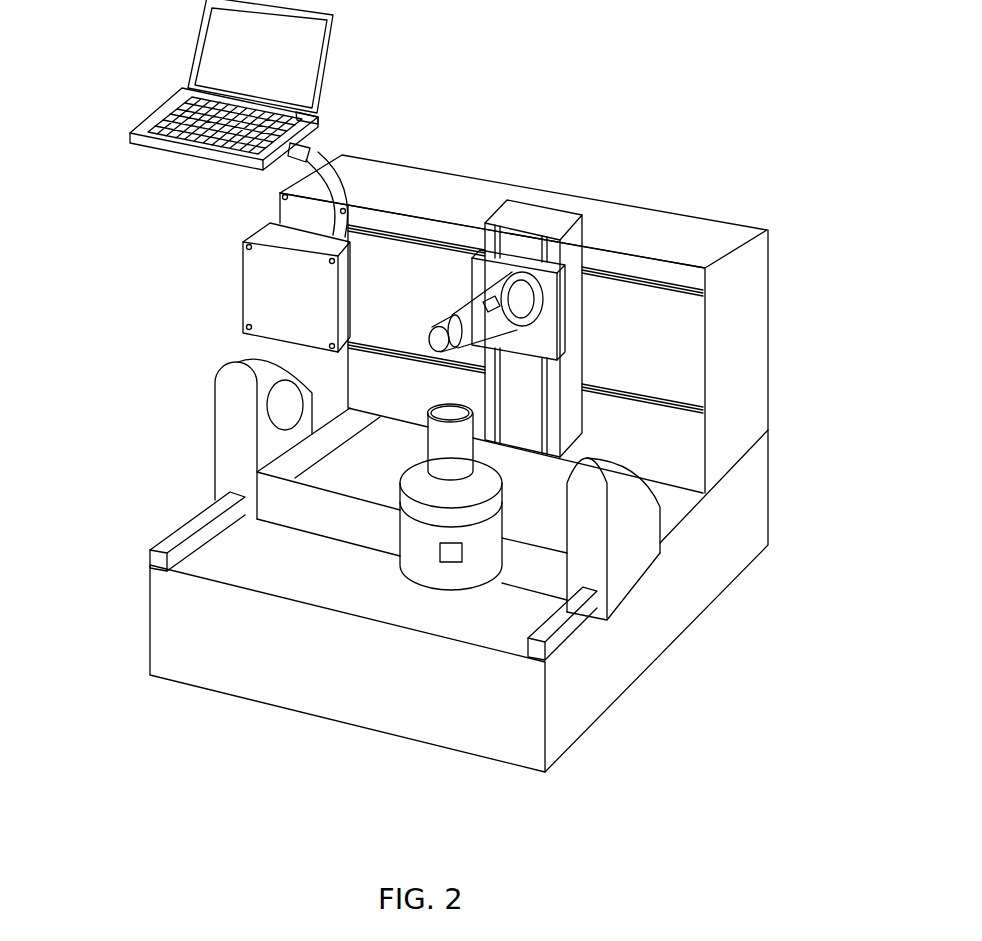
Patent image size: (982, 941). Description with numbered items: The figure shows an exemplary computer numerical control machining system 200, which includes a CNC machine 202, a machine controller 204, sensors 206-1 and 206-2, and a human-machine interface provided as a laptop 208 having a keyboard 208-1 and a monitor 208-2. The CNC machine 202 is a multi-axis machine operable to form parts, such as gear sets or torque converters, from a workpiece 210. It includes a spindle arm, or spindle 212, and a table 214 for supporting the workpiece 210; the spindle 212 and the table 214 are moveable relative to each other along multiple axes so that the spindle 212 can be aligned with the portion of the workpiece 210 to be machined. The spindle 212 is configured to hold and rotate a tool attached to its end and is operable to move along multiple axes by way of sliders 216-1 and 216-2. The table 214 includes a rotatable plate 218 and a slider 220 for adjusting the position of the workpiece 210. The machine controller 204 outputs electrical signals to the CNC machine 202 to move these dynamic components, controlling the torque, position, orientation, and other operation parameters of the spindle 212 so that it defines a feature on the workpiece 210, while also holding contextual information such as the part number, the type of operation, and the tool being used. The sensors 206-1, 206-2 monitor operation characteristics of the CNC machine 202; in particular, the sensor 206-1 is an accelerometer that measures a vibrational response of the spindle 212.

The machining system 200 is at (702, 85).
The CNC machine 202 is at (733, 213).
The machine controller 204 is at (250, 285).
The sensor 206-1 is at (495, 297).
The sensor 206-2 is at (443, 557).
The laptop 208 is at (201, 118).
The keyboard 208-1 is at (162, 108).
The monitor 208-2 is at (200, 36).
The workpiece 210 is at (438, 450).
The spindle arm 212 is at (632, 273).
The table 214 is at (688, 582).
The slider 216-1 is at (432, 238).
The slider 216-2 is at (553, 253).
The rotatable plate 218 is at (563, 630).
The slider 220 is at (212, 477).